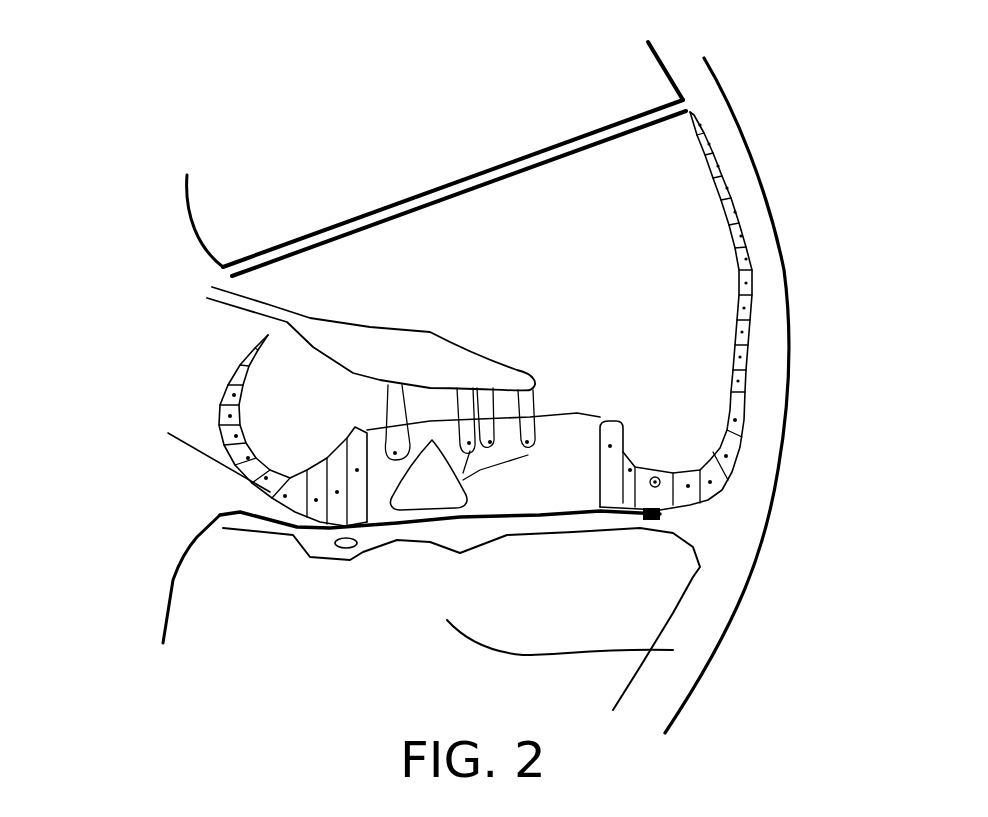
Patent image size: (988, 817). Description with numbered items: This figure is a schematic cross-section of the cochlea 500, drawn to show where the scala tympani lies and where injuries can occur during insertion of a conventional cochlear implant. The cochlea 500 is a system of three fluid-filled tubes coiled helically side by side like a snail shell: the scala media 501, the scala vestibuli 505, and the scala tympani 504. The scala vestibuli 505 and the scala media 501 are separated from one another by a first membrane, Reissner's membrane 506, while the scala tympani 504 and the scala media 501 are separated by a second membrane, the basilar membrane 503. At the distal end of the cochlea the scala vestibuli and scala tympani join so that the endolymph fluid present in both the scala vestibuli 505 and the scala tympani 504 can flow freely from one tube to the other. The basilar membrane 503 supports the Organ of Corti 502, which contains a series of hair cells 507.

The cochlea 500 is at (800, 496).
The scala media 501 is at (663, 296).
The Organ of Corti 502 is at (590, 414).
The basilar membrane 503 is at (647, 520).
The scala tympani 504 is at (673, 650).
The scala vestibuli 505 is at (242, 125).
The Reissner's membrane 506 is at (512, 153).
The hair cells 507 is at (367, 434).